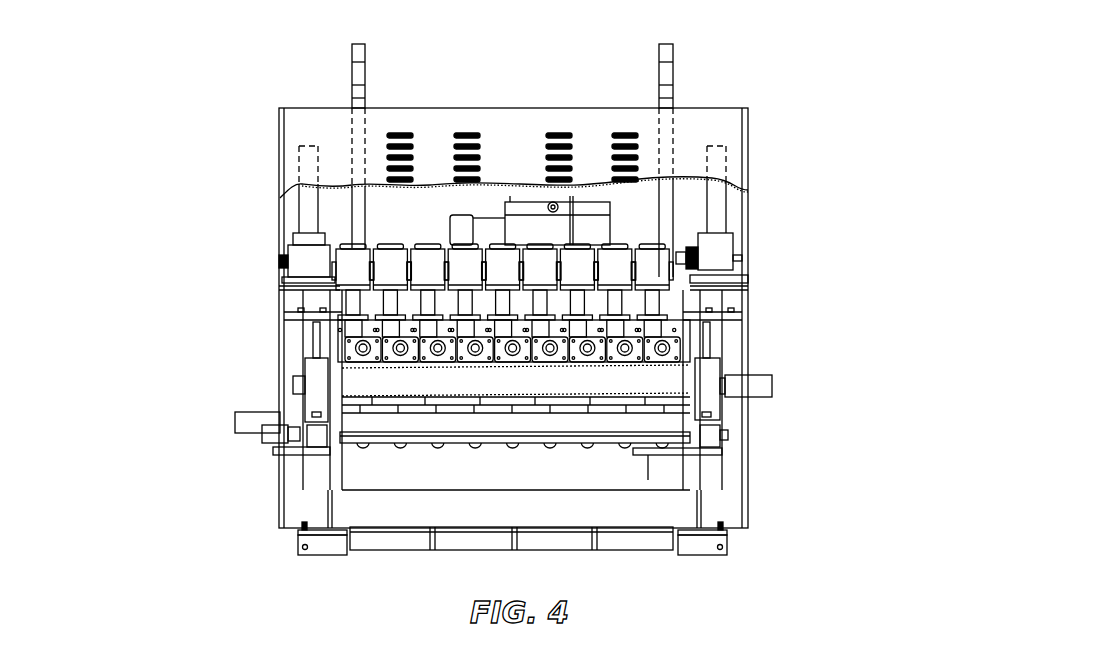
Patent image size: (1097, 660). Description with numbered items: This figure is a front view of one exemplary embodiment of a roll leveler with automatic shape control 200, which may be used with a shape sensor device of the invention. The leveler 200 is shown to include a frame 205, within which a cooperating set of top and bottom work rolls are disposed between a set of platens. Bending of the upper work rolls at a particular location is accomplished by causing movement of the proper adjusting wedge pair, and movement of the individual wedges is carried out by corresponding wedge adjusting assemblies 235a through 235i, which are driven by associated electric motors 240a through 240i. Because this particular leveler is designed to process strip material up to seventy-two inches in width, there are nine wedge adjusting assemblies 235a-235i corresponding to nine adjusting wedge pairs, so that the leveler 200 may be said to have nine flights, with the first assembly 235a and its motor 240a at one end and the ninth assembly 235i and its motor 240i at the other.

The roll leveler with automatic shape control 200 is at (147, 89).
The frame 205 is at (748, 293).
The electric motor 240a is at (355, 265).
The electric motor 240i is at (656, 265).
The wedge adjusting assembly 235a is at (332, 342).
The wedge adjusting assembly 235i is at (679, 342).